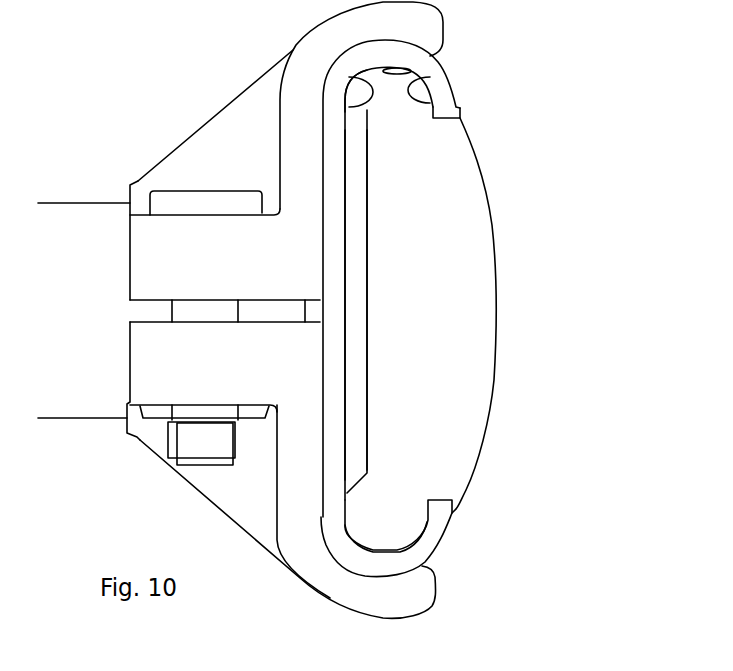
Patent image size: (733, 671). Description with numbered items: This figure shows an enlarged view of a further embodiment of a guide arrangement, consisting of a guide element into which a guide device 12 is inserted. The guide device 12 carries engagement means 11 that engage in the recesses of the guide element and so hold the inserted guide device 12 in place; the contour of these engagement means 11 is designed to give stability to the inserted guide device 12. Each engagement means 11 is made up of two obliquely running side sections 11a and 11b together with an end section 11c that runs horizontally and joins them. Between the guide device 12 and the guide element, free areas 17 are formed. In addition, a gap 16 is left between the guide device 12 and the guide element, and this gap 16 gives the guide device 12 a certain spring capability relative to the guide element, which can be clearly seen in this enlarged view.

The engagement means 11 is at (383, 110).
The side section 11a is at (360, 109).
The side section 11b is at (460, 112).
The end section 11c is at (384, 69).
The guide device 12 is at (514, 306).
The gap 16 is at (350, 262).
The free areas 17 is at (357, 78).